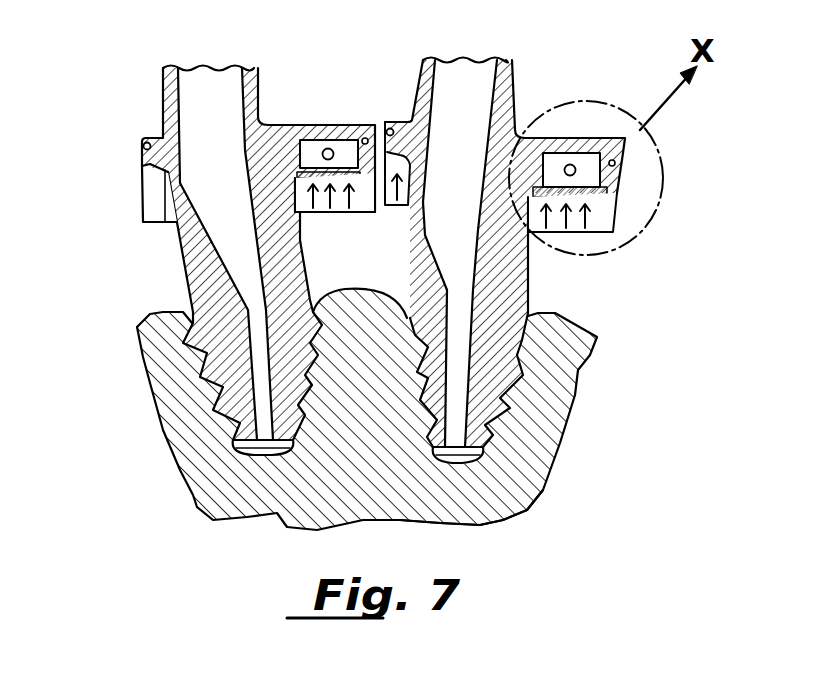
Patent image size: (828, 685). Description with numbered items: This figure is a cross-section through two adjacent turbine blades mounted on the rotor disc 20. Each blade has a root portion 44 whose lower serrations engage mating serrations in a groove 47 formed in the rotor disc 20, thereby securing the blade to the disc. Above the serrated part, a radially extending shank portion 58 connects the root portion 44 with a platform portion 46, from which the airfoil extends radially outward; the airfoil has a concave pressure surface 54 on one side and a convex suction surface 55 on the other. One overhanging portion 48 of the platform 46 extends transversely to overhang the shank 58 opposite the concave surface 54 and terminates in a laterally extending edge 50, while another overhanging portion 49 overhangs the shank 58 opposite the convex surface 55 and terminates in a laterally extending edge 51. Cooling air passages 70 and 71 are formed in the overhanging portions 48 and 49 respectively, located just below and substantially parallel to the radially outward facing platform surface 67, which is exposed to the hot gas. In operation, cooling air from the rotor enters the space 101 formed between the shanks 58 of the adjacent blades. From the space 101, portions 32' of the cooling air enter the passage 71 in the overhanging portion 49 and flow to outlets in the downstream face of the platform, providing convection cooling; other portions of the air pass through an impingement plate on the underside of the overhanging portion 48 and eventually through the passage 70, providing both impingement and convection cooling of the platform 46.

The rotor disc 20 is at (590, 367).
The portions of cooling air 32' is at (431, 163).
The root portion 44 is at (547, 403).
The platform portion 46 is at (540, 137).
The groove 47 is at (517, 512).
The overhanging portion 48 is at (623, 152).
The overhanging portion 49 is at (146, 143).
The laterally extending edge 50 is at (608, 186).
The laterally extending edge 51 is at (138, 156).
The concave pressure surface 54 is at (531, 240).
The convex suction surface 55 is at (421, 72).
The shank portion 58 is at (528, 270).
The radially outward facing platform surface 67 is at (310, 127).
The cooling air passage 70 is at (611, 160).
The cooling air passage 71 is at (389, 124).
The space 101 is at (354, 274).